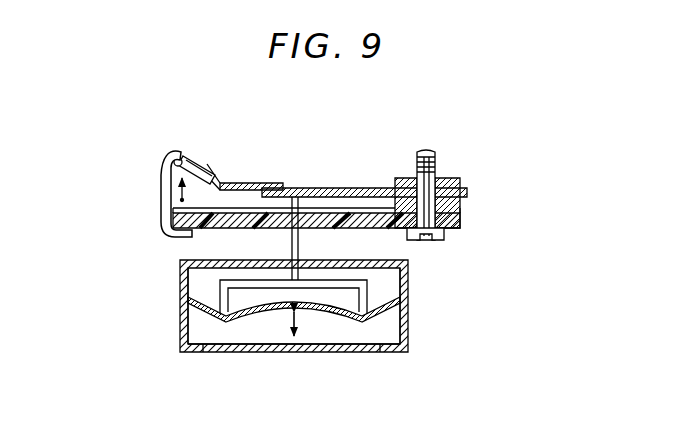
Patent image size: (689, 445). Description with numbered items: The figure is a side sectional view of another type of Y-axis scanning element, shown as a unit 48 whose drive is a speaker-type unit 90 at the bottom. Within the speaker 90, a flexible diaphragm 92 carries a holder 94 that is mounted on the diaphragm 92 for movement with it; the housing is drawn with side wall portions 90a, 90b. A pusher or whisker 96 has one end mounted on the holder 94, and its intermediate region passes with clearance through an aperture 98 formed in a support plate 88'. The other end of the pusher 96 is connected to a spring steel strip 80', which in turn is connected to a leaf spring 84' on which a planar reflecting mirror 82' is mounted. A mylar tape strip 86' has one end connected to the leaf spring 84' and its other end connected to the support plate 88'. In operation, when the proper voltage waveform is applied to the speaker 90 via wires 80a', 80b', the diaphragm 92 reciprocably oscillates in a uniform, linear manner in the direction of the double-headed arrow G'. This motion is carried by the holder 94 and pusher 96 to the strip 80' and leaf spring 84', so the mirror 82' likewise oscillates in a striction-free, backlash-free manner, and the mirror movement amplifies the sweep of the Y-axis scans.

The transducer assembly 48 is at (158, 386).
The spring steel strip 80' is at (337, 167).
The wire 80a' is at (241, 372).
The wire 80b' is at (352, 376).
The planar reflecting mirror 82' is at (230, 162).
The leaf spring 84' is at (178, 126).
The mylar tape strip 86' is at (147, 194).
The support plate 88' is at (435, 222).
The speaker-type unit 90 is at (412, 340).
The housing side wall 90a is at (377, 344).
The housing side wall 90b is at (207, 344).
The flexible diaphragm 92 is at (224, 316).
The holder 94 is at (226, 296).
The pusher or whisker 96 is at (288, 211).
The aperture 98 is at (302, 222).
The double-headed arrow G' is at (194, 192).